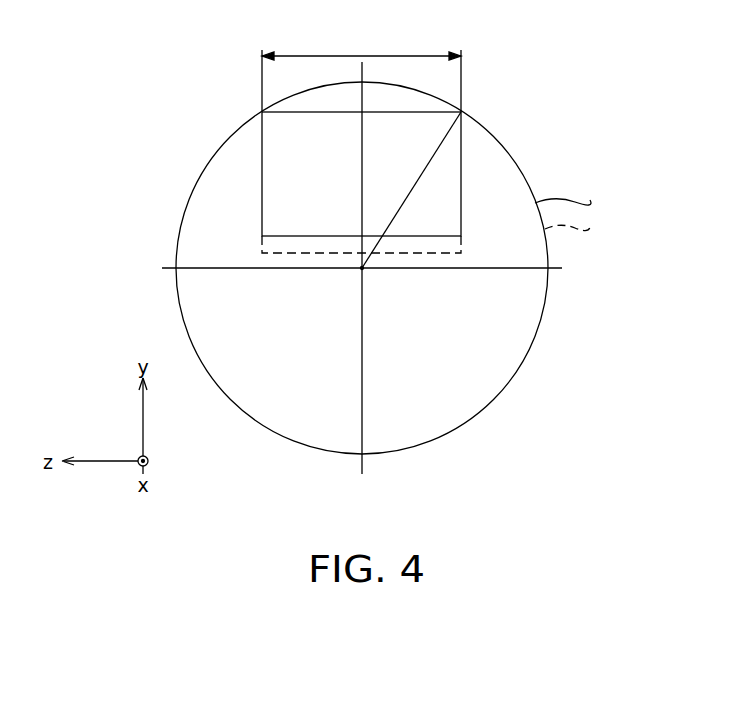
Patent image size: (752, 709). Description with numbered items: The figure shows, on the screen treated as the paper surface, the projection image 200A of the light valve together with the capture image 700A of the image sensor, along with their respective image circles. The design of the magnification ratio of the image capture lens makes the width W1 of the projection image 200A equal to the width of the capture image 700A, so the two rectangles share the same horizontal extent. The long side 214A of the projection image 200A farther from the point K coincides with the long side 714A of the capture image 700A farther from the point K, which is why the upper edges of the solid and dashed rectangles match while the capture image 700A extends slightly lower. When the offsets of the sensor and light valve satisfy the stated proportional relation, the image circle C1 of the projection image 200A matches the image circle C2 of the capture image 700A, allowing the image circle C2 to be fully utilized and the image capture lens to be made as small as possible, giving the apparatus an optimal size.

The projection image 200A is at (462, 167).
The capture image 700A is at (462, 249).
The long side of the capture image 714A is at (292, 123).
The long side of the projection image 214A is at (305, 113).
The image circle of the projection image C1 is at (573, 200).
The image circle of the capture image C2 is at (578, 226).
The point K is at (362, 268).
The width of the projection image W1 is at (361, 68).